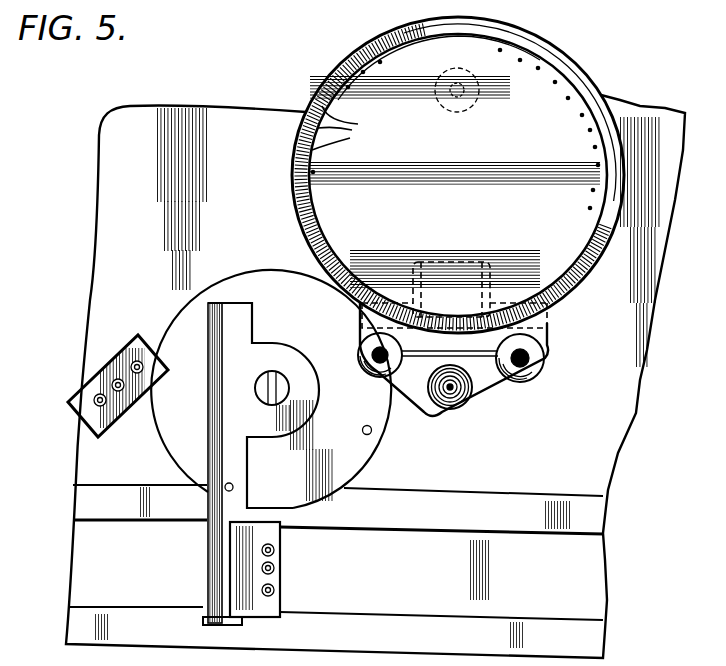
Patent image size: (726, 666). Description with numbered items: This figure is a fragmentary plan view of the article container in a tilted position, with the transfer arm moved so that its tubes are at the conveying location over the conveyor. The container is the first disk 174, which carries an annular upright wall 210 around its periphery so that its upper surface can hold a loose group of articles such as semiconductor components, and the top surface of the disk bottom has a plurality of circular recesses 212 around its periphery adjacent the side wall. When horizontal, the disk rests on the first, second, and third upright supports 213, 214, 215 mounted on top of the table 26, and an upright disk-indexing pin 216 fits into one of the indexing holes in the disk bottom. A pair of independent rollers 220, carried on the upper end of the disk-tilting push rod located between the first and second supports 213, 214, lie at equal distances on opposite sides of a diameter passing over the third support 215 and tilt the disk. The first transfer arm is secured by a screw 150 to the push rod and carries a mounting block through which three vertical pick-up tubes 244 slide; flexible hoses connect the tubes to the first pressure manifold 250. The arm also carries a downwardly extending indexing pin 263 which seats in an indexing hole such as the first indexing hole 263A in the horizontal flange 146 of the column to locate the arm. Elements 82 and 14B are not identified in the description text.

The table 26 is at (136, 162).
The guide band 82 is at (506, 502).
The vertical bar 14B is at (207, 508).
The horizontal flange 146 is at (368, 460).
The indexing pin 263 is at (233, 488).
The first indexing hole 263A is at (371, 431).
The screw 150 is at (278, 380).
The first pressure manifold 250 is at (128, 338).
The pick-up tubes 244 is at (275, 550).
The annular upright wall 210 is at (562, 60).
The first disk 174 is at (374, 36).
The circular recesses 212 is at (354, 128).
The third upright support 215 is at (484, 103).
The independent rollers 220 is at (482, 258).
The second upright support 214 is at (362, 350).
The first upright support 213 is at (548, 353).
The disk-indexing pin 216 is at (451, 390).